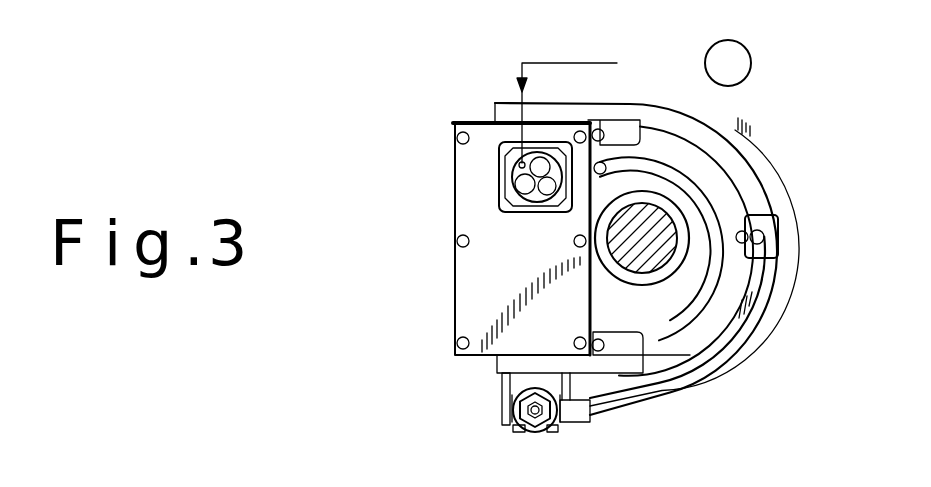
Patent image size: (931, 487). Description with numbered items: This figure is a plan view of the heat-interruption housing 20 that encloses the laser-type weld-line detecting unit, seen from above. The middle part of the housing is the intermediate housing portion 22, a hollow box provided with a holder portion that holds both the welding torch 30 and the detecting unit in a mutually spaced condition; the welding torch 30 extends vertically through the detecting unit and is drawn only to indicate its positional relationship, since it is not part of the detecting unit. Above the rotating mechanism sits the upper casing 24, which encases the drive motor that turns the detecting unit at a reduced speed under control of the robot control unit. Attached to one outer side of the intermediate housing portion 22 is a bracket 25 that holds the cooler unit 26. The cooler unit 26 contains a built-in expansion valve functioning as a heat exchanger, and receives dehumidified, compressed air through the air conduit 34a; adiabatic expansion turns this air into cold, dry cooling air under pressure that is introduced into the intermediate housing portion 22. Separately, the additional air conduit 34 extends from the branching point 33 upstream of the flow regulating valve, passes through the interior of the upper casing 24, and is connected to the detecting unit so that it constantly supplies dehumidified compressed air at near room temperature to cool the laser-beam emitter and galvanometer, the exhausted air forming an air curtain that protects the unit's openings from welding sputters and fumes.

The heat-interruption housing 20 is at (735, 146).
The intermediate housing portion 22 is at (780, 212).
The upper casing 24 is at (463, 288).
The bracket 25 is at (500, 419).
The cooler unit 26 is at (500, 389).
The welding torch 30 is at (674, 232).
The branching point 33 is at (728, 63).
The additional air conduit 34 is at (568, 63).
The air conduit 34a is at (667, 387).